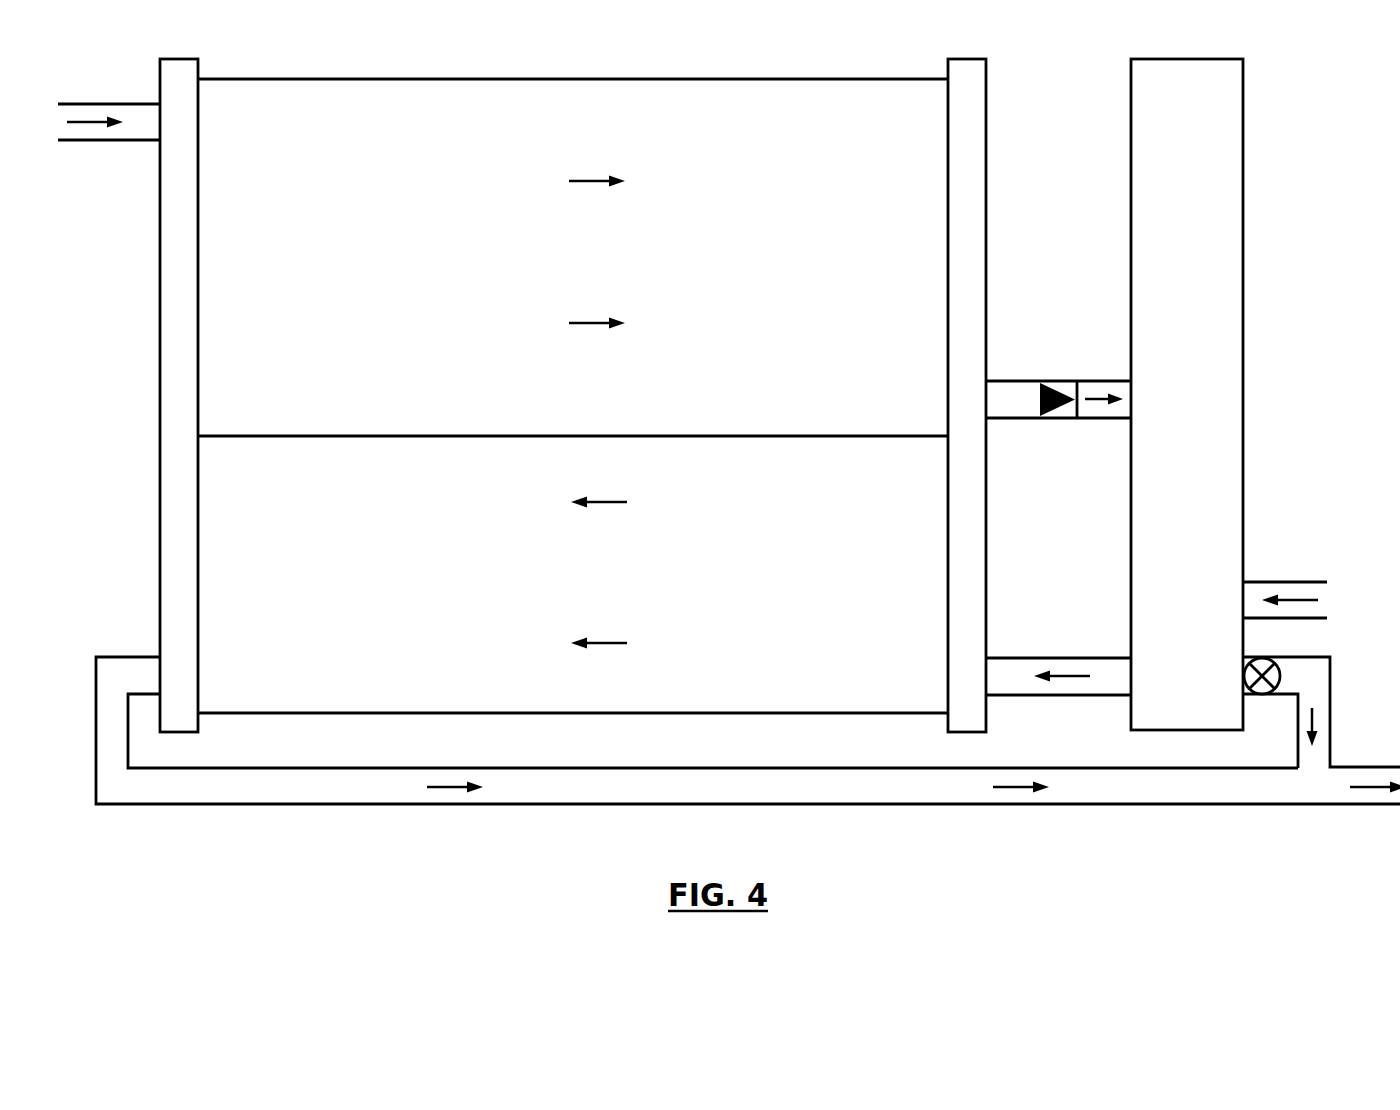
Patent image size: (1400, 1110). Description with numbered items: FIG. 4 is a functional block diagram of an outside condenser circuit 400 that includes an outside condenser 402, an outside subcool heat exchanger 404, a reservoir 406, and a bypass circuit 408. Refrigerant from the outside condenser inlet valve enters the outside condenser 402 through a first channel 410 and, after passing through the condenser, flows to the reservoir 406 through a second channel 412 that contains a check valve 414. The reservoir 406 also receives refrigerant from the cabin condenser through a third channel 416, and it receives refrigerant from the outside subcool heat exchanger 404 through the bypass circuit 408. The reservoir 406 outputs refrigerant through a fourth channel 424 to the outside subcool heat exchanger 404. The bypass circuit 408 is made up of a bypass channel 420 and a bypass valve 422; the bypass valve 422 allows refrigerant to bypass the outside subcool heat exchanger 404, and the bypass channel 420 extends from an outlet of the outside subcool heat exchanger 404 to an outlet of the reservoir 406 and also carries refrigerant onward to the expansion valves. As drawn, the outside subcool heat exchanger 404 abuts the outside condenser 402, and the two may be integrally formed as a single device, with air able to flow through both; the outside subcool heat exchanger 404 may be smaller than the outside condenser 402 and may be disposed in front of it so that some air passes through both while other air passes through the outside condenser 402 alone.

The outside condenser circuit 400 is at (214, 38).
The outside condenser 402 is at (985, 103).
The outside subcool heat exchanger 404 is at (987, 480).
The reservoir 406 is at (1244, 83).
The bypass circuit 408 is at (356, 849).
The first channel 410 is at (99, 103).
The second channel 412 is at (1061, 379).
The check valve 414 is at (1062, 410).
The third channel 416 is at (1262, 620).
The bypass channel 420 is at (1332, 712).
The bypass valve 422 is at (1260, 697).
The fourth channel 424 is at (1055, 657).